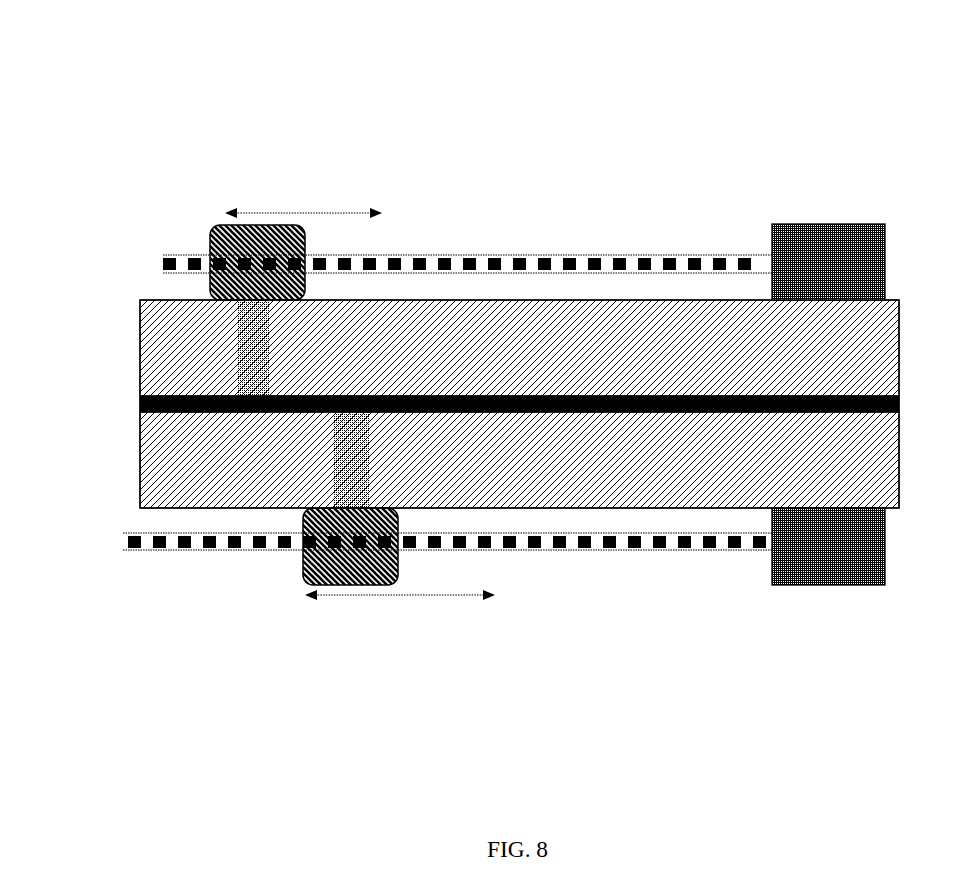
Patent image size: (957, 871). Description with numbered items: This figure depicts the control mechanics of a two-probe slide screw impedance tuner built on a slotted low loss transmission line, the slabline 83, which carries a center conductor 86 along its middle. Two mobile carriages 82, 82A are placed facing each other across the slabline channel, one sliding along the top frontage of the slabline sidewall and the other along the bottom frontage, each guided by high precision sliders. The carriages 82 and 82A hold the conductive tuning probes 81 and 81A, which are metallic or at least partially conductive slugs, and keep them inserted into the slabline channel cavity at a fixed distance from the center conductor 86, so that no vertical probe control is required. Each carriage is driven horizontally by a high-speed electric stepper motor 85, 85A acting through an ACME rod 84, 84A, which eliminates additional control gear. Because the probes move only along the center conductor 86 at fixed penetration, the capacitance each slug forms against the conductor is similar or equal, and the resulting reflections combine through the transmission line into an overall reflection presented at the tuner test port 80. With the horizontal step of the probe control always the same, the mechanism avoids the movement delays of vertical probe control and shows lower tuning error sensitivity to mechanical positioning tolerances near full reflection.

The tuner test port 80 is at (140, 397).
The tuning probe 81 is at (233, 343).
The tuning probe 81A is at (333, 452).
The mobile carriage 82 is at (212, 225).
The mobile carriage 82A is at (304, 585).
The slabline 83 is at (447, 300).
The ACME rod 84 is at (520, 257).
The ACME rod 84A is at (643, 550).
The electric stepper motor 85 is at (772, 224).
The electric stepper motor 85A is at (818, 588).
The center conductor 86 is at (620, 416).